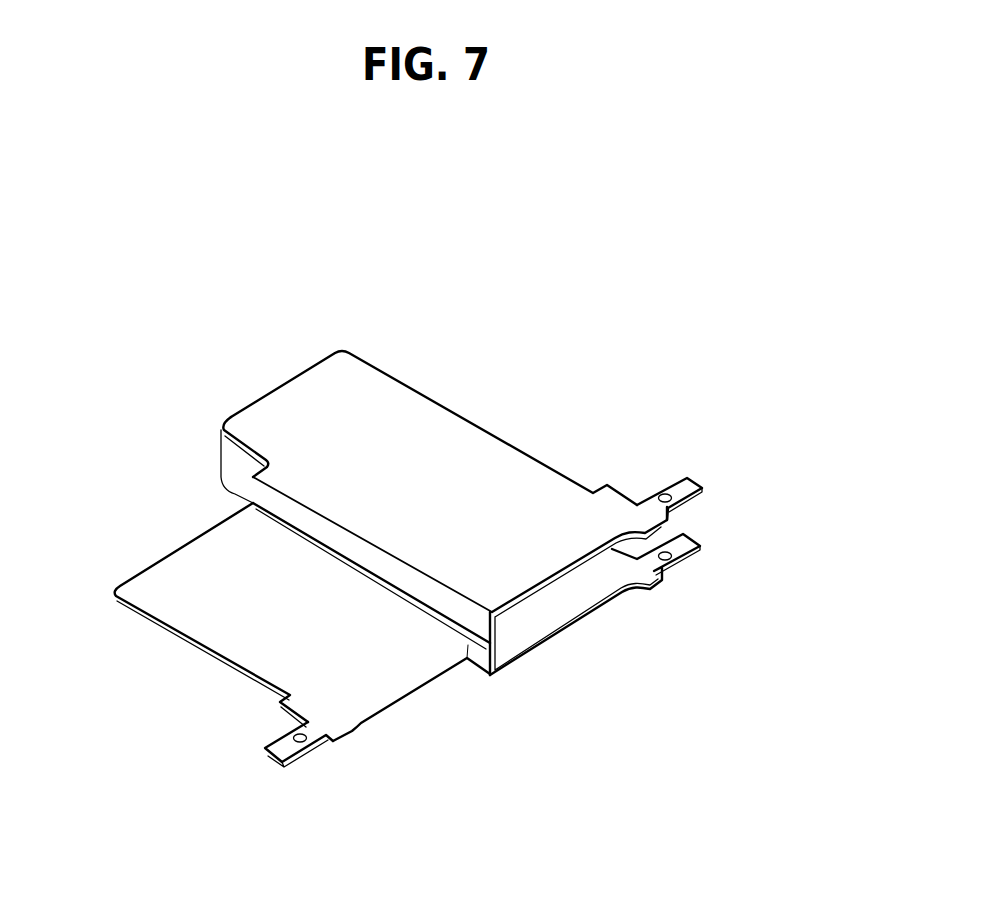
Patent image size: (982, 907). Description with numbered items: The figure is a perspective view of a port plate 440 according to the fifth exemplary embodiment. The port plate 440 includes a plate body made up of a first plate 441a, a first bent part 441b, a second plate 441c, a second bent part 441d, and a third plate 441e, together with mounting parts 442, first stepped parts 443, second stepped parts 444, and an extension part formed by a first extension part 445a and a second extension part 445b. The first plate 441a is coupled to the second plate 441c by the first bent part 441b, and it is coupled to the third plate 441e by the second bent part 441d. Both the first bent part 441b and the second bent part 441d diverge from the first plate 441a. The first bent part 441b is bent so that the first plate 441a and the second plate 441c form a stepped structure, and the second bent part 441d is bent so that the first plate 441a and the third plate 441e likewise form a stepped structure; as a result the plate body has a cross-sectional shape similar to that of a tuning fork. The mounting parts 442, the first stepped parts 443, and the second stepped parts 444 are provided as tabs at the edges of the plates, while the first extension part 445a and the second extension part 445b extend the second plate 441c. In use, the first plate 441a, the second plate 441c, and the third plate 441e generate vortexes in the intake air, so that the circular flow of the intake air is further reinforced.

The port plate 440 is at (664, 233).
The first plate 441a is at (200, 620).
The first bent part 441b is at (265, 493).
The second plate 441c is at (437, 447).
The second bent part 441d is at (478, 664).
The third plate 441e is at (531, 630).
The mounting parts 442 is at (265, 745).
The first stepped parts 443 is at (610, 497).
The second stepped parts 444 is at (667, 596).
The first extension part 445a is at (307, 381).
The second extension part 445b is at (233, 463).